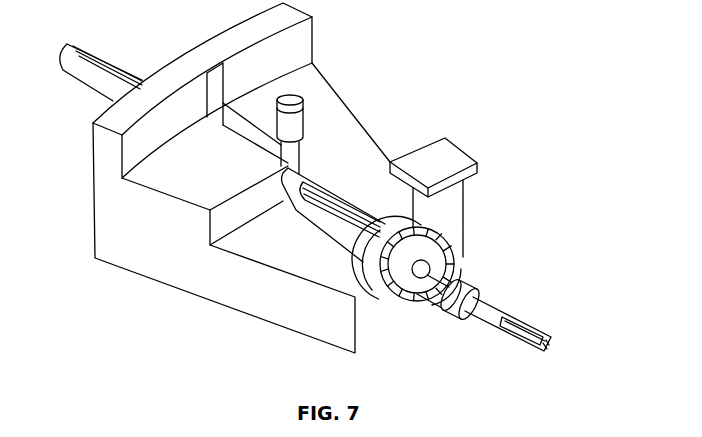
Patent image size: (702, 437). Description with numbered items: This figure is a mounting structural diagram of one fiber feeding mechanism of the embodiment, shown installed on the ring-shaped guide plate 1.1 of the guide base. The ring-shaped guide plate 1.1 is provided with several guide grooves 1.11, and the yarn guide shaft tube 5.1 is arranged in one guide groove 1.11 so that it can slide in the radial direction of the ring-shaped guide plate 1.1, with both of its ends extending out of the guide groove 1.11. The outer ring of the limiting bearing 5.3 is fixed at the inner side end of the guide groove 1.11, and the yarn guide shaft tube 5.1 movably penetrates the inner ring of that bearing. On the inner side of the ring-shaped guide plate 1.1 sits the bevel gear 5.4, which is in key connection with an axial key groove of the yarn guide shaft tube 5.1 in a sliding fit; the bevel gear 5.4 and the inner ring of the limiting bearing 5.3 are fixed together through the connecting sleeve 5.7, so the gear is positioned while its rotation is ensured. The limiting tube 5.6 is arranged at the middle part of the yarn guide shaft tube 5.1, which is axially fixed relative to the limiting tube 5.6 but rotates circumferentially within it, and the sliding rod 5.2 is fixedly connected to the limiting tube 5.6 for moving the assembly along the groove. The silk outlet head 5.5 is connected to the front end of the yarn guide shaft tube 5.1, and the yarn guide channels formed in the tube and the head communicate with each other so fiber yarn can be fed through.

The ring-shaped guide plate 1.1 is at (275, 372).
The guide groove 1.11 is at (370, 378).
The yarn guide shaft tube 5.1 is at (142, 25).
The sliding rod 5.2 is at (380, 50).
The limiting bearing 5.3 is at (459, 90).
The bevel gear 5.4 is at (534, 158).
The silk outlet head 5.5 is at (568, 250).
The limiting tube 5.6 is at (412, 84).
The connecting sleeve 5.7 is at (445, 358).